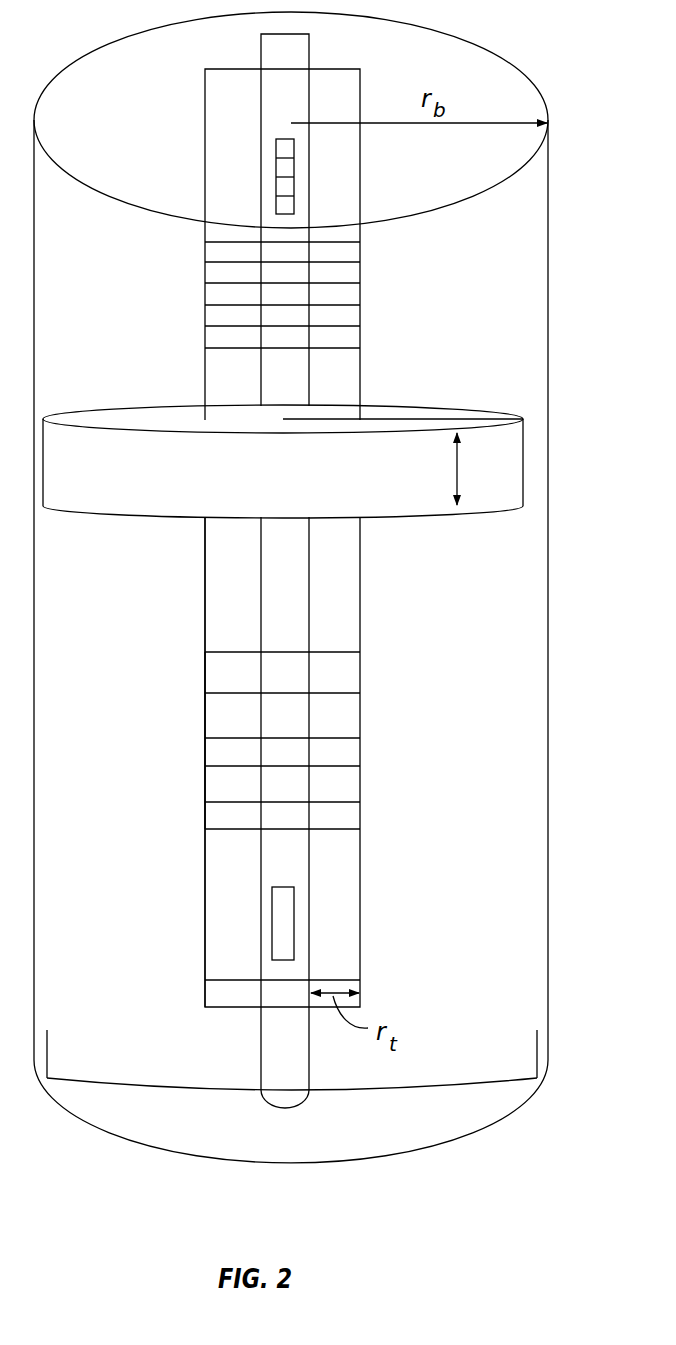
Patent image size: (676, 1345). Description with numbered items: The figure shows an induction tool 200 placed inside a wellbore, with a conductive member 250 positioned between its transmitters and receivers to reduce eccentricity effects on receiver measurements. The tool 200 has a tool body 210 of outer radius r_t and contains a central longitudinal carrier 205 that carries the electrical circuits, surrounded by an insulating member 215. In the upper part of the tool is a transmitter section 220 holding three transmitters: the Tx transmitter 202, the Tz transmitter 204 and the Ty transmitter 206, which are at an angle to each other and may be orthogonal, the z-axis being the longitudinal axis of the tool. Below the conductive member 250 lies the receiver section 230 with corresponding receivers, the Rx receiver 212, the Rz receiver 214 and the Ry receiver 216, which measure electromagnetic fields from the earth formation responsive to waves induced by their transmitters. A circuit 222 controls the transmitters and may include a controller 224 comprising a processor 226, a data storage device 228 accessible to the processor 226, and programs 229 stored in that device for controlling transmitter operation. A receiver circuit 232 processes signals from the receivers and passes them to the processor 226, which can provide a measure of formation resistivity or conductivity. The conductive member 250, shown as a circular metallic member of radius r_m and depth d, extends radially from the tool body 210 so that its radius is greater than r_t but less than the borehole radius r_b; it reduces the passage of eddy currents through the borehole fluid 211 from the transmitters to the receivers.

The induction tool 200 is at (225, 70).
The Tx transmitter 202 is at (351, 253).
The Tz transmitter 204 is at (351, 295).
The central longitudinal carrier 205 is at (310, 583).
The Ty transmitter 206 is at (351, 338).
The tool body 210 is at (282, 678).
The borehole fluid 211 is at (485, 880).
The Rx receiver 212 is at (351, 673).
The Rz receiver 214 is at (351, 755).
The insulating member 215 is at (205, 621).
The Ry receiver 216 is at (351, 815).
The transmitter section 220 is at (287, 284).
The circuit 222 is at (252, 145).
The controller 224 is at (288, 146).
The processor 226 is at (279, 168).
The data storage device 228 is at (288, 185).
The programs 229 is at (279, 206).
The receiver section 230 is at (188, 806).
The receiver circuit 232 is at (272, 903).
The conductive member 250 is at (524, 456).